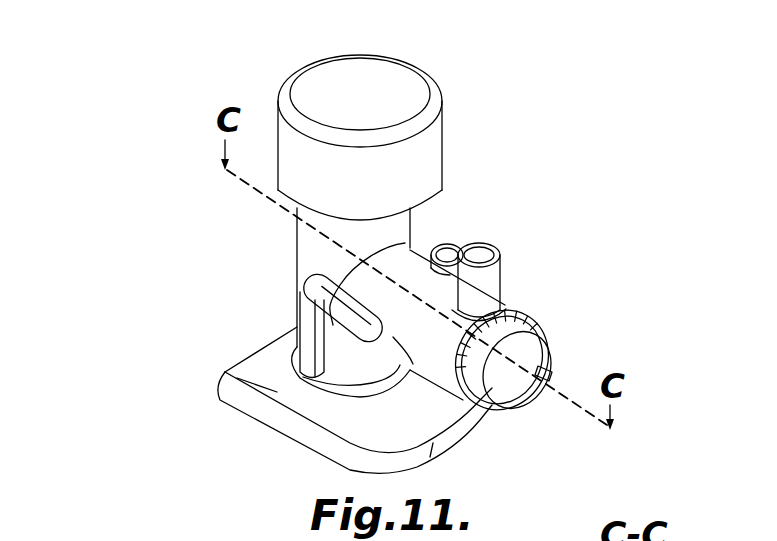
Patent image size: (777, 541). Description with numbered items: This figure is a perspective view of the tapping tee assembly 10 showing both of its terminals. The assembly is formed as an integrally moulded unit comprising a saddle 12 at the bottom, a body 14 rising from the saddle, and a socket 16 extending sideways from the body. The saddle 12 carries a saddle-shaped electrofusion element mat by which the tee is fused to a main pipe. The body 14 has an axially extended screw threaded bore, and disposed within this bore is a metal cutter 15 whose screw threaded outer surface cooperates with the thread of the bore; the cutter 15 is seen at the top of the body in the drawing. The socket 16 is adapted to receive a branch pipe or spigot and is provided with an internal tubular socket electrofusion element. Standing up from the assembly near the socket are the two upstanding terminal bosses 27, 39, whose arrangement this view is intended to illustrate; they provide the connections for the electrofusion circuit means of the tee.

The tapping tee assembly 10 is at (552, 298).
The saddle 12 is at (226, 371).
The body 14 is at (297, 248).
The metal cutter 15 is at (395, 92).
The socket 16 is at (470, 416).
The terminal boss 27 is at (482, 255).
The terminal boss 39 is at (458, 243).